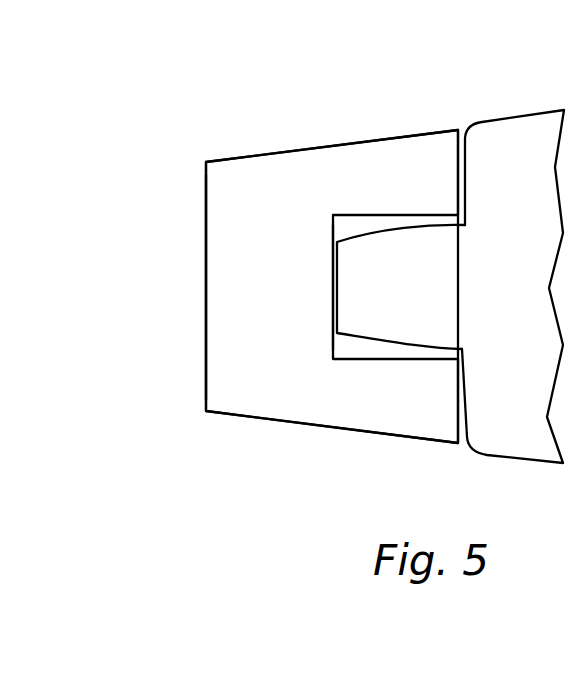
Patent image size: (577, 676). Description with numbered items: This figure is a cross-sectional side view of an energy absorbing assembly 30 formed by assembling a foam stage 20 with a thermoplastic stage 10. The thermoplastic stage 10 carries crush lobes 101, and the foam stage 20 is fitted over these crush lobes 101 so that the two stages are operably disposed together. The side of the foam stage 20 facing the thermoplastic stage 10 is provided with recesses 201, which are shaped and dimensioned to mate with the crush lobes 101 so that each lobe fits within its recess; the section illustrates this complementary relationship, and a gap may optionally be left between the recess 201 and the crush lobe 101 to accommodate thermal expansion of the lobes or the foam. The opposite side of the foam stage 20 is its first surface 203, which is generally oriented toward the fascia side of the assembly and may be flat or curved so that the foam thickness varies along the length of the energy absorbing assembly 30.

The thermoplastic stage 10 is at (495, 118).
The crush lobes 101 is at (407, 277).
The foam stage 20 is at (232, 159).
The recesses 201 is at (362, 360).
The first surface 203 is at (206, 247).
The energy absorbing assembly 30 is at (168, 343).